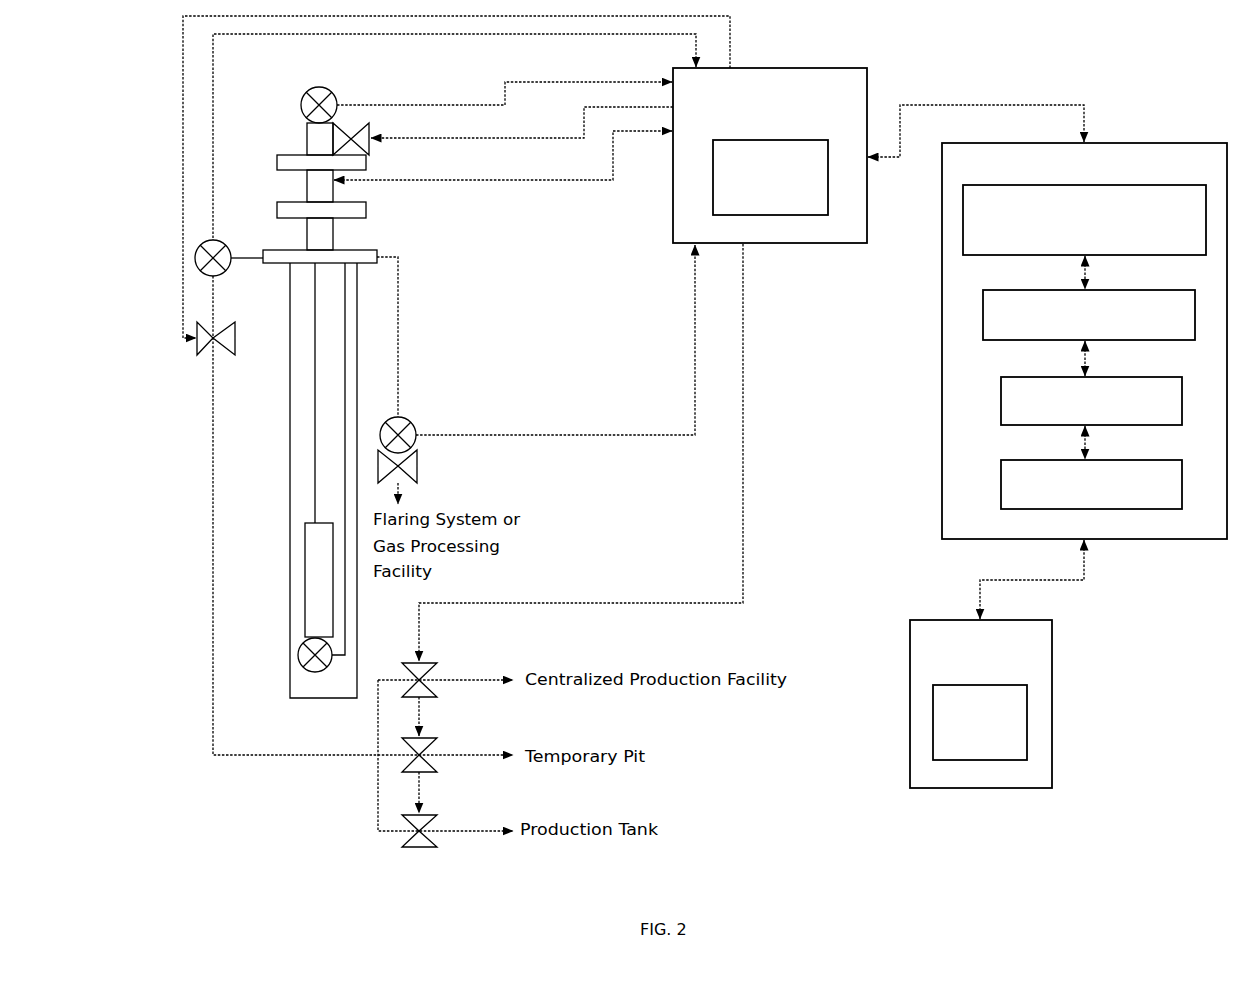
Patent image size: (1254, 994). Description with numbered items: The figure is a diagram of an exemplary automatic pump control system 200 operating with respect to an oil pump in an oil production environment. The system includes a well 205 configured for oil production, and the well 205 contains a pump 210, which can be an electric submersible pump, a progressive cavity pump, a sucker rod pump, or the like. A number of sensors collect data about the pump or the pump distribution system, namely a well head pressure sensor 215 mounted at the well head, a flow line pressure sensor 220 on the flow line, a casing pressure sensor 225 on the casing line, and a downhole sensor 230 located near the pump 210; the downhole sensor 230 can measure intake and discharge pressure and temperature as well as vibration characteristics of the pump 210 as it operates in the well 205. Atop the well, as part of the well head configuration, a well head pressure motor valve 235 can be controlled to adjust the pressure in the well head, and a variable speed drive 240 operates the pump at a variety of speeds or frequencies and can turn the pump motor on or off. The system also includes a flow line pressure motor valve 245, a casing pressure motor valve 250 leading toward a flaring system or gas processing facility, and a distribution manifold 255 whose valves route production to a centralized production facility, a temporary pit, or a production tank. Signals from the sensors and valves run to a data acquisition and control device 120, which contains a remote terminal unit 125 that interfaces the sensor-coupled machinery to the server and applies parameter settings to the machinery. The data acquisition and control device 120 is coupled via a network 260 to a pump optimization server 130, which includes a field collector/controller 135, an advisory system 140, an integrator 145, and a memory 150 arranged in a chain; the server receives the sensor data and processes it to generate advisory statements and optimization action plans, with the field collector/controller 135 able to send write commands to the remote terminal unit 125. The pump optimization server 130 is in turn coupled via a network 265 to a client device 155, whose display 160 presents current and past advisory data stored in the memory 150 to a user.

The automatic pump control system 200 is at (158, 54).
The well 205 is at (288, 474).
The pump 210 is at (315, 578).
The well head pressure sensor (WHPS) 215 is at (486, 95).
The flow line pressure sensor (FLPS) 220 is at (221, 239).
The casing pressure sensor (CPS) 225 is at (419, 421).
The downhole sensor (DHS) 230 is at (305, 670).
The well head pressure motor valve 235 is at (371, 128).
The variable speed drive 240 is at (336, 190).
The flow line pressure motor valve 245 is at (237, 340).
The casing pressure motor valve 250 is at (421, 472).
The distribution manifold 255 is at (398, 710).
The network 260 is at (976, 121).
The network 265 is at (1041, 579).
The data acquisition and control device 120 is at (770, 155).
The remote terminal unit 125 is at (770, 177).
The pump optimization server 130 is at (1084, 341).
The field collector/controller 135 is at (1084, 220).
The advisory system 140 is at (1089, 315).
The integrator 145 is at (1091, 401).
The memory 150 is at (1091, 484).
The client device 155 is at (981, 704).
The display 160 is at (980, 722).